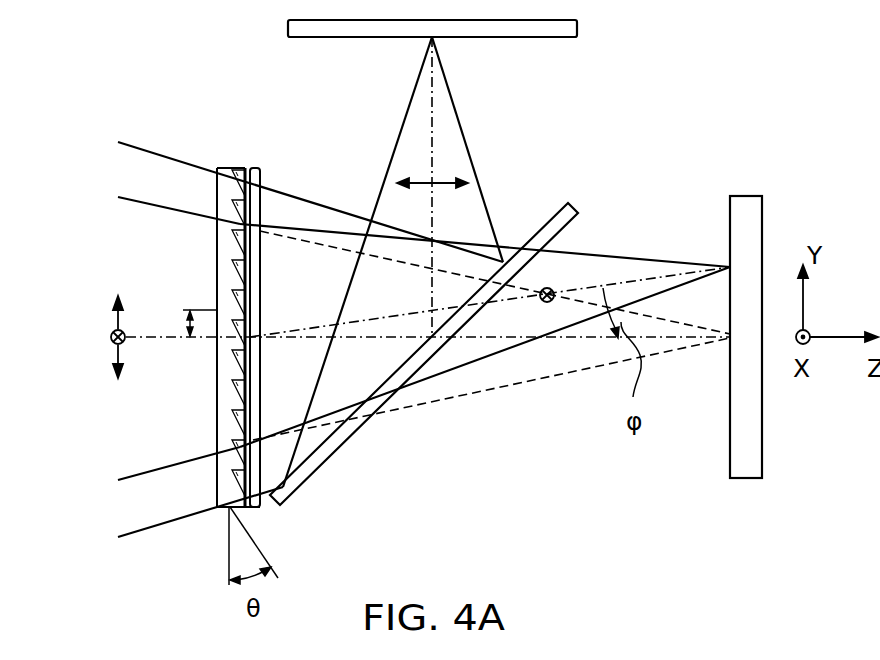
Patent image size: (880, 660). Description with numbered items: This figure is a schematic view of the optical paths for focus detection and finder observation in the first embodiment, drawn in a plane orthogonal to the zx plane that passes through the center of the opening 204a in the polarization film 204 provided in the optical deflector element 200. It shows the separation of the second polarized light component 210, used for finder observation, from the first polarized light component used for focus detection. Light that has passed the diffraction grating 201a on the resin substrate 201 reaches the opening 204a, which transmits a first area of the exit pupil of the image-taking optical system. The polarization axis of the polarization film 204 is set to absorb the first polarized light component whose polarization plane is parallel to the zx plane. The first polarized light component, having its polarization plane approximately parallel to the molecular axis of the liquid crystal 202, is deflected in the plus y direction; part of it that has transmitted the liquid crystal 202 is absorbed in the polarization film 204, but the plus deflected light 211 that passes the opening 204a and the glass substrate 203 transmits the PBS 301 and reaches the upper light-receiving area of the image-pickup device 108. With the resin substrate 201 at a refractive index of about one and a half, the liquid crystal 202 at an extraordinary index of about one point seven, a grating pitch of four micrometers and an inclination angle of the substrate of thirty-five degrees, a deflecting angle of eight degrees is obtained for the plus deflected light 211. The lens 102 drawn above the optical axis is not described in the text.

The lens 102 is at (535, 38).
The image-pickup device 108 is at (746, 470).
The optical deflector element 200 is at (248, 351).
The resin substrate 201 is at (145, 339).
The diffraction grating 201a is at (217, 245).
The liquid crystal 202 is at (240, 170).
The glass substrate 203 is at (259, 169).
The polarization film 204 is at (283, 299).
The opening 204a is at (249, 288).
The second polarized light component 210 is at (445, 181).
The plus deflected light 211 is at (628, 263).
The PBS 301 is at (284, 496).